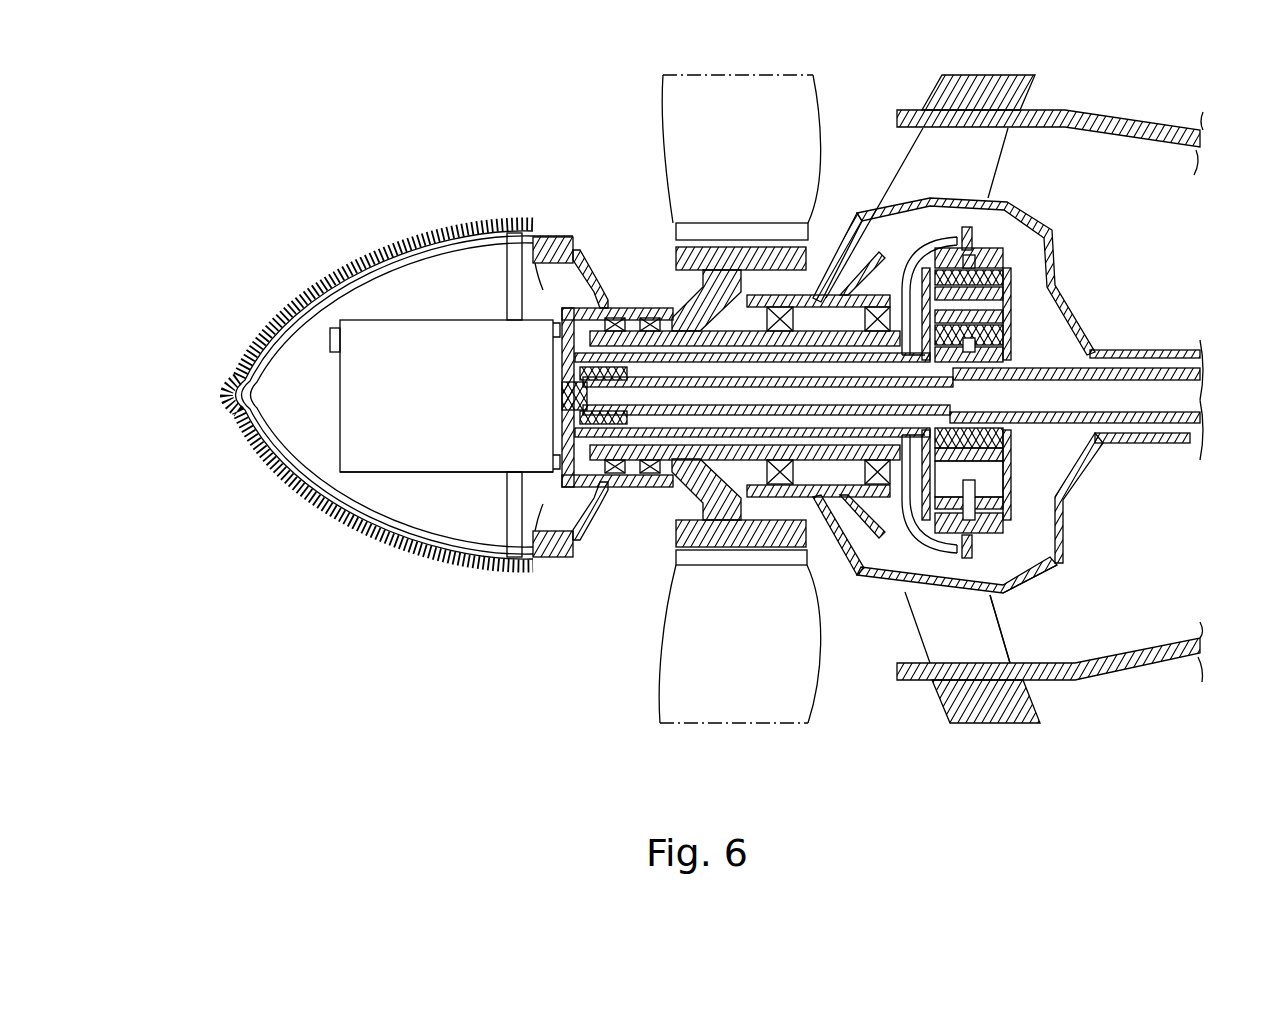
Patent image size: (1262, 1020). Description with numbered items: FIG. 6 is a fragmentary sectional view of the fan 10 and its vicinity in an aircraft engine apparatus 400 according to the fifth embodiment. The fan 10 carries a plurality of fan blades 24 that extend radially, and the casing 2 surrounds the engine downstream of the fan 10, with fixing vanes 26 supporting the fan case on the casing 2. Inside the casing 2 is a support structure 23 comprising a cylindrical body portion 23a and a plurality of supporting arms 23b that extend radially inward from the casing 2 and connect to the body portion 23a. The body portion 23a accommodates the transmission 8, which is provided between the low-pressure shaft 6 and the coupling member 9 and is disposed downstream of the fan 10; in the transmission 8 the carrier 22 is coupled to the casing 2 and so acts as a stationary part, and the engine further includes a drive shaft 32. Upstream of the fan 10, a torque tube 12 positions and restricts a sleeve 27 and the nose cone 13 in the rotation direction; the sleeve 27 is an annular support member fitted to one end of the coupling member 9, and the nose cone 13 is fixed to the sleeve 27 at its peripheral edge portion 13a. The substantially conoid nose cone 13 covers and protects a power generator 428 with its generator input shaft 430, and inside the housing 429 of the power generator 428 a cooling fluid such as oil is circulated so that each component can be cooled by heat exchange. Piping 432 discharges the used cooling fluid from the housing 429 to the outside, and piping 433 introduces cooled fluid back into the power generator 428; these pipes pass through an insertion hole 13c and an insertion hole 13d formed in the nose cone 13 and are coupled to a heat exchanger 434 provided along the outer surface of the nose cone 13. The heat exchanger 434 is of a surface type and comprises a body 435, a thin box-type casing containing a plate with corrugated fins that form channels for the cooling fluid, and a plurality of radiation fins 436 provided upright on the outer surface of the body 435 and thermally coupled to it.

The aircraft engine apparatus 400 is at (250, 212).
The radiation fins 436 is at (350, 250).
The heat exchanger 434 is at (266, 308).
The piping 433 is at (500, 285).
The piping 432 is at (505, 510).
The housing 429 is at (338, 380).
The power generator 428 is at (380, 478).
The nose cone 13 is at (548, 232).
The peripheral edge portion 13a is at (565, 232).
The insertion hole 13c is at (537, 525).
The insertion hole 13d is at (537, 265).
The body 435 is at (540, 560).
The sleeve 27 is at (595, 292).
The torque tube 12 is at (593, 490).
The fan 10 is at (655, 158).
The generator input shaft 430 is at (610, 425).
The low-pressure shaft 6 is at (1090, 352).
The fan blades 24 is at (825, 113).
The casing 2 is at (1080, 110).
The fixing vanes 26 is at (1040, 700).
The transmission 8 is at (997, 245).
The drive shaft 32 is at (808, 377).
The carrier 22 is at (1015, 478).
The coupling member 9 is at (835, 500).
The support structure 23 is at (1065, 565).
The body portion 23a is at (1020, 595).
The supporting arms 23b is at (1005, 633).